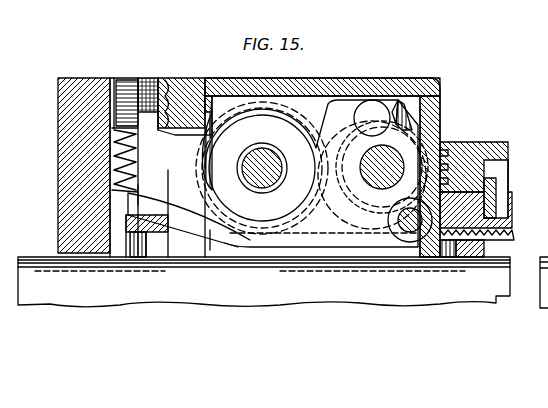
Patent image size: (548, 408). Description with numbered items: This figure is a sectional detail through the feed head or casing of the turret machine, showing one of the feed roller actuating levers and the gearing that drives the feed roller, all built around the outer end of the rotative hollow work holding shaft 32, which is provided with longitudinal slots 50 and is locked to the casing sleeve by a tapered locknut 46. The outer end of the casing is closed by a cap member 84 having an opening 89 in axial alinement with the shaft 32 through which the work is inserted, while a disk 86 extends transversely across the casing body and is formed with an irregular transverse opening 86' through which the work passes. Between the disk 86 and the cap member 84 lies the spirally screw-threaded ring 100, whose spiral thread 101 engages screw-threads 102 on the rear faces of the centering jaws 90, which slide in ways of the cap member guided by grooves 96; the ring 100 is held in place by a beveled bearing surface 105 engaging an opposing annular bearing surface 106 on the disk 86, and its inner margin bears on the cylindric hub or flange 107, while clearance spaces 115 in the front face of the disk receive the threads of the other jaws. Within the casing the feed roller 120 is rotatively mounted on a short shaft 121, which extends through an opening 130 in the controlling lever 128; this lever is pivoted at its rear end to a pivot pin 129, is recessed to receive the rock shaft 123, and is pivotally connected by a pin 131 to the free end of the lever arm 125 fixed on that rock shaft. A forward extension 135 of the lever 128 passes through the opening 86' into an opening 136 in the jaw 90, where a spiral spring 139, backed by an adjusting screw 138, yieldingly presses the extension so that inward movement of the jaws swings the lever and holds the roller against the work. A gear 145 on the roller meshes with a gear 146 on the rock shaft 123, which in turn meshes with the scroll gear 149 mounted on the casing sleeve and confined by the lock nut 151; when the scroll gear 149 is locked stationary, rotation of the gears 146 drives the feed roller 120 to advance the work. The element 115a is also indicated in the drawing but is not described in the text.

The hollow work holding and work supporting shaft 32 is at (507, 305).
The opening 89 is at (75, 256).
The screw-threads 102 is at (150, 117).
The cap member 84 is at (66, 163).
The adjusting screws 138 is at (128, 82).
The spiral springs 139 is at (118, 130).
The spiral thread 101 is at (182, 78).
The spirally screw-threaded ring 100 is at (200, 78).
The centering jaws 90 is at (110, 78).
The plate or disk 86 is at (322, 153).
The beveled annular bearing surface 105 is at (216, 96).
The annular bearing surface 106 is at (246, 102).
The feed rollers 120 is at (298, 90).
The levers 128 is at (306, 247).
The irregular transverse opening 86' is at (226, 151).
The roller shafts 121 is at (262, 168).
The openings 130 is at (246, 204).
The gears 146 is at (404, 108).
The pivot pins or lugs 131 is at (376, 108).
The gears 145 is at (348, 100).
The clearance spaces 115 is at (372, 86).
The lever arms 125 is at (438, 108).
The rock shafts 123 is at (378, 190).
The pivot pins 129 is at (410, 222).
The cylindric bearing hub or flange 107 is at (189, 220).
The forward extensions 135 is at (130, 195).
The openings 136 is at (128, 225).
The grooves 96 is at (130, 243).
The pawl extension 115a is at (462, 142).
The scroll gear 149 is at (490, 142).
The lock nut 151 is at (500, 174).
The longitudinal slots 50 is at (512, 243).
The locknut 46 is at (464, 242).